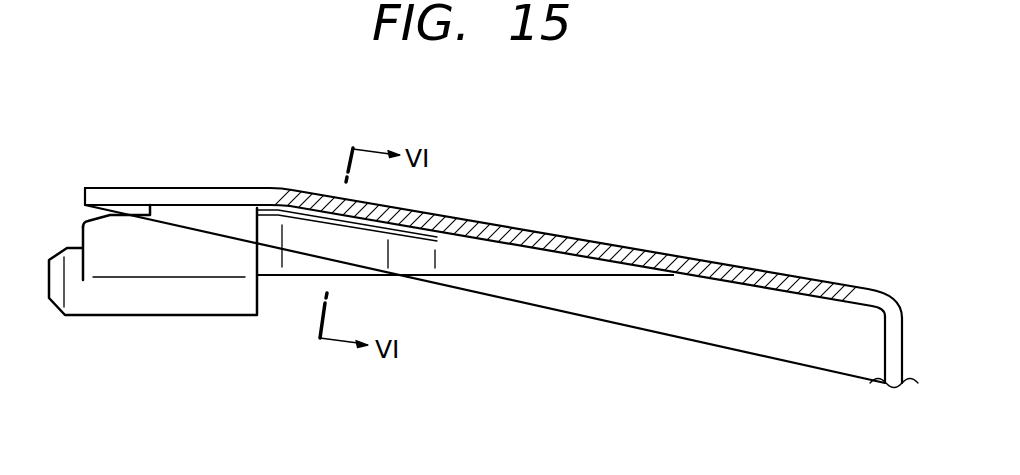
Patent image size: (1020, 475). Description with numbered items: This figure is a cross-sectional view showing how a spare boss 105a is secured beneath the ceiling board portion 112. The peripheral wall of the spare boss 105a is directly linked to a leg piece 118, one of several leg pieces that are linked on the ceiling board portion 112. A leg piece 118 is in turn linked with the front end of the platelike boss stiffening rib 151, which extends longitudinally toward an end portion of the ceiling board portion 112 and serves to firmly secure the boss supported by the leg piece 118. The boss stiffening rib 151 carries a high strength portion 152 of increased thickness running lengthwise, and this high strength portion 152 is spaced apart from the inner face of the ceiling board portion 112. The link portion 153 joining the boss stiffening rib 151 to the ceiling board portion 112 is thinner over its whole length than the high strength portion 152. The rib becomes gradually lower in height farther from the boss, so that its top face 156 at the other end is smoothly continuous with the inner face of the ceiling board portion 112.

The ceiling board portion 112 is at (758, 257).
The leg piece 118 is at (116, 228).
The boss stiffening rib 151 is at (500, 257).
The high strength portion 152 is at (303, 236).
The link portion 153 is at (412, 252).
The top face 156 is at (643, 277).
The spare boss 105a is at (138, 315).